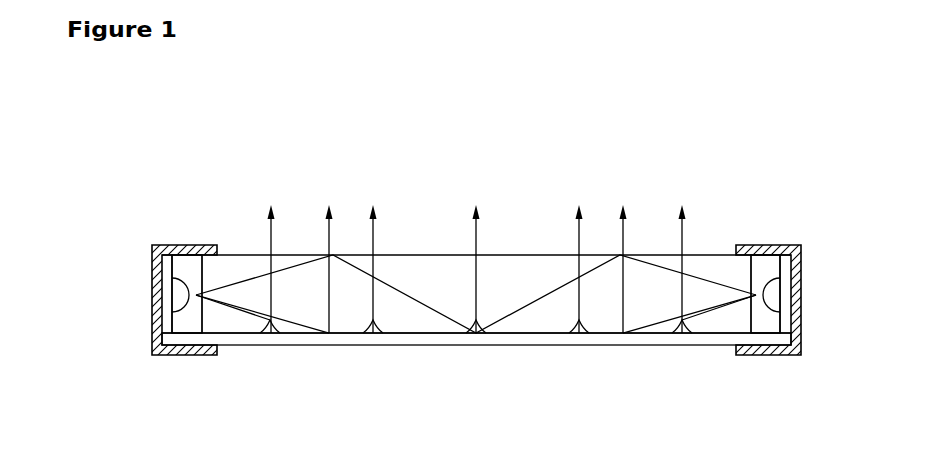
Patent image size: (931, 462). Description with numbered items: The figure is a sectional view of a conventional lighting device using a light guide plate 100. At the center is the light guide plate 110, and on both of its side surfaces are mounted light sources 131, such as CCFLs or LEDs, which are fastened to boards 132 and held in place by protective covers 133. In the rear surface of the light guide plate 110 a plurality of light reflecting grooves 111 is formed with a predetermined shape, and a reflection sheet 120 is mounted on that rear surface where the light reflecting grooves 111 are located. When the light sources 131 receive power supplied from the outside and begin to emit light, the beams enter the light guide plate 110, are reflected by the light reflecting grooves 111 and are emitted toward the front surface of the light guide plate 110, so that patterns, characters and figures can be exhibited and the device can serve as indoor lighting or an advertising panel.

The lighting device using a light guide plate 100 is at (519, 157).
The light guide plate 110 is at (428, 270).
The light reflecting grooves 111 is at (573, 331).
The reflection sheet 120 is at (423, 336).
The light sources 131 is at (182, 278).
The boards 132 is at (172, 277).
The protective covers 133 is at (188, 290).